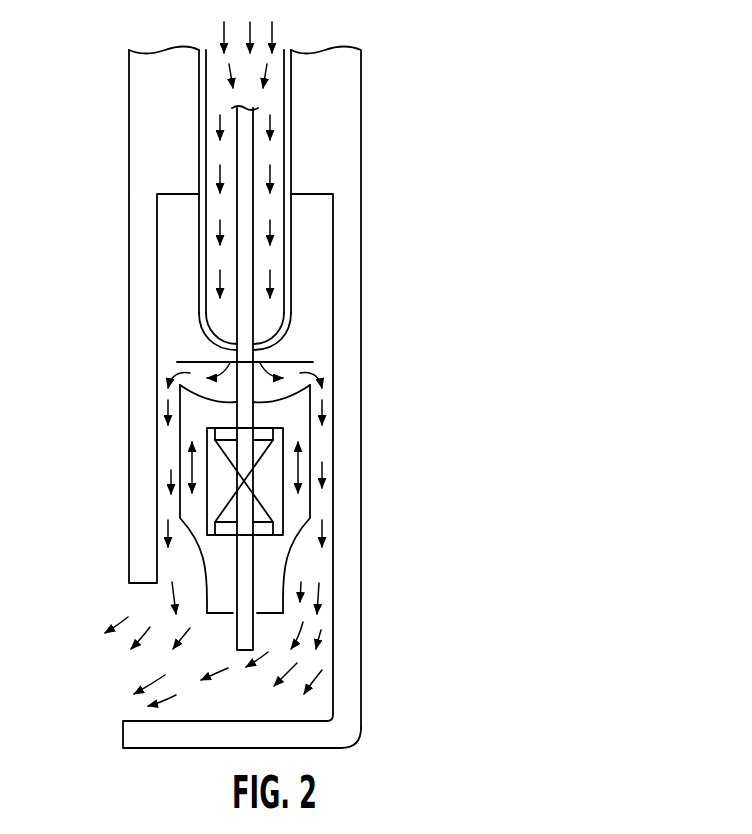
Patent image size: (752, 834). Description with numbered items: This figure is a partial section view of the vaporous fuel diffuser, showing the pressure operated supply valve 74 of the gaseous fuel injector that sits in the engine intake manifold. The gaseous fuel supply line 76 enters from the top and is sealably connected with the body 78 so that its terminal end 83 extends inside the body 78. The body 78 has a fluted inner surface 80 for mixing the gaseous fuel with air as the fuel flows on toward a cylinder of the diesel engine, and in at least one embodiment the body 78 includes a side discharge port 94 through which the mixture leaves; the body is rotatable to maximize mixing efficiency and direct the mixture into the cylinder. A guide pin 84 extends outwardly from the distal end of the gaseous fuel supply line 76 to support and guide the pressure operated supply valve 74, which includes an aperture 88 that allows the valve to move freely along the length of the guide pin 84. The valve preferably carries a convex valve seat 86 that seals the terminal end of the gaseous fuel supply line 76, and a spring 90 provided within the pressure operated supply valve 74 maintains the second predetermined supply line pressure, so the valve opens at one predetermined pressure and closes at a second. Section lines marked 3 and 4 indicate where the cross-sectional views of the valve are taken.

The pressure operated supply valve 74 is at (84, 251).
The gaseous fuel supply line 76 is at (272, 75).
The body 78 is at (361, 157).
The fluted inner surface 80 is at (158, 367).
The terminal end 83 is at (291, 338).
The guide pin 84 is at (245, 572).
The convex valve seat 86 is at (305, 378).
The aperture 88 is at (220, 617).
The spring 90 is at (263, 498).
The side discharge port 94 is at (118, 682).
The section line 3- 3 is at (177, 362).
The section line 4- 4 is at (92, 500).